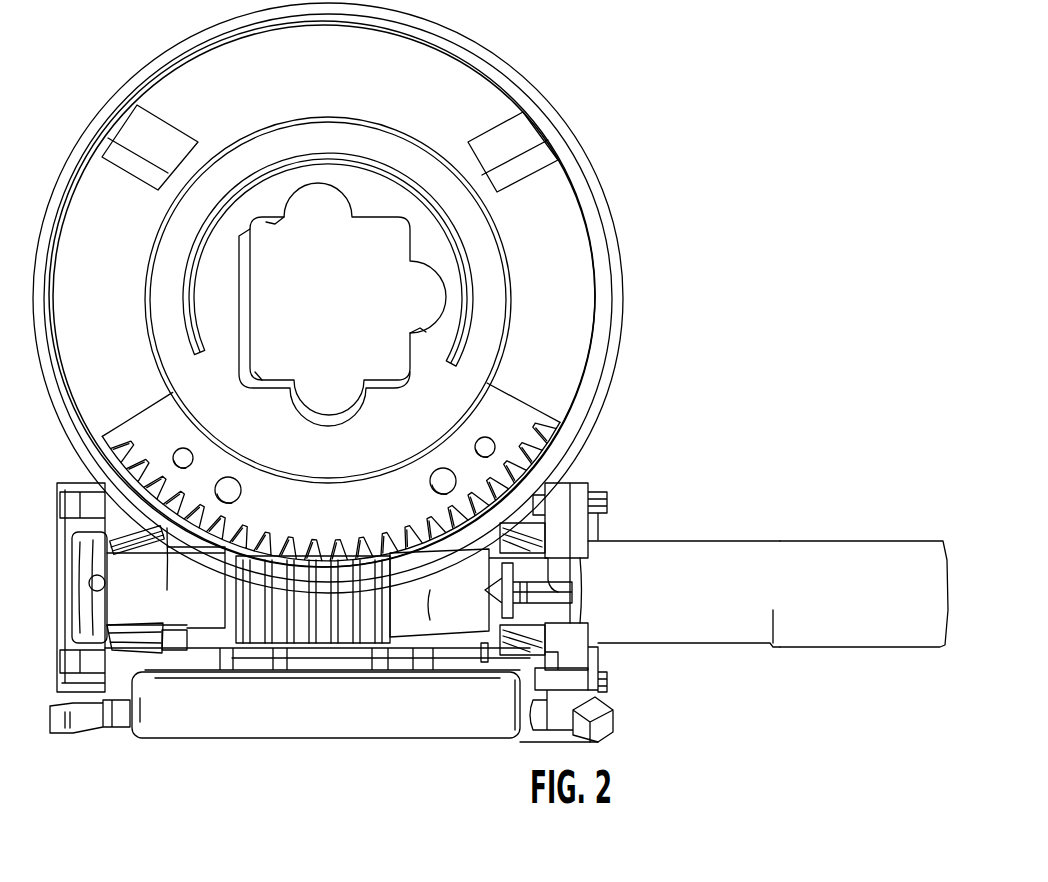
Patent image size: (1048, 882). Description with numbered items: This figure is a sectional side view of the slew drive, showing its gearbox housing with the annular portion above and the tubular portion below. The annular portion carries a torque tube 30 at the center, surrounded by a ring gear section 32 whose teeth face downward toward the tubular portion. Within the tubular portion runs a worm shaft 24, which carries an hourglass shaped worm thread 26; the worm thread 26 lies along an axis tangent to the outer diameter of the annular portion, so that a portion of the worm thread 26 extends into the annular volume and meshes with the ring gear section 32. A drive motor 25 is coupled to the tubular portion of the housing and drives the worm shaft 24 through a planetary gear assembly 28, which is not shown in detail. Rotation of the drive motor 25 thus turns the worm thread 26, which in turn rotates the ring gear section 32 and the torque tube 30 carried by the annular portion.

The worm shaft 24 is at (473, 610).
The drive motor 25 is at (836, 563).
The hourglass shaped worm thread 26 is at (373, 607).
The planetary gear assembly 28 is at (731, 622).
The torque tube 30 is at (442, 360).
The ring gear section 32 is at (508, 421).